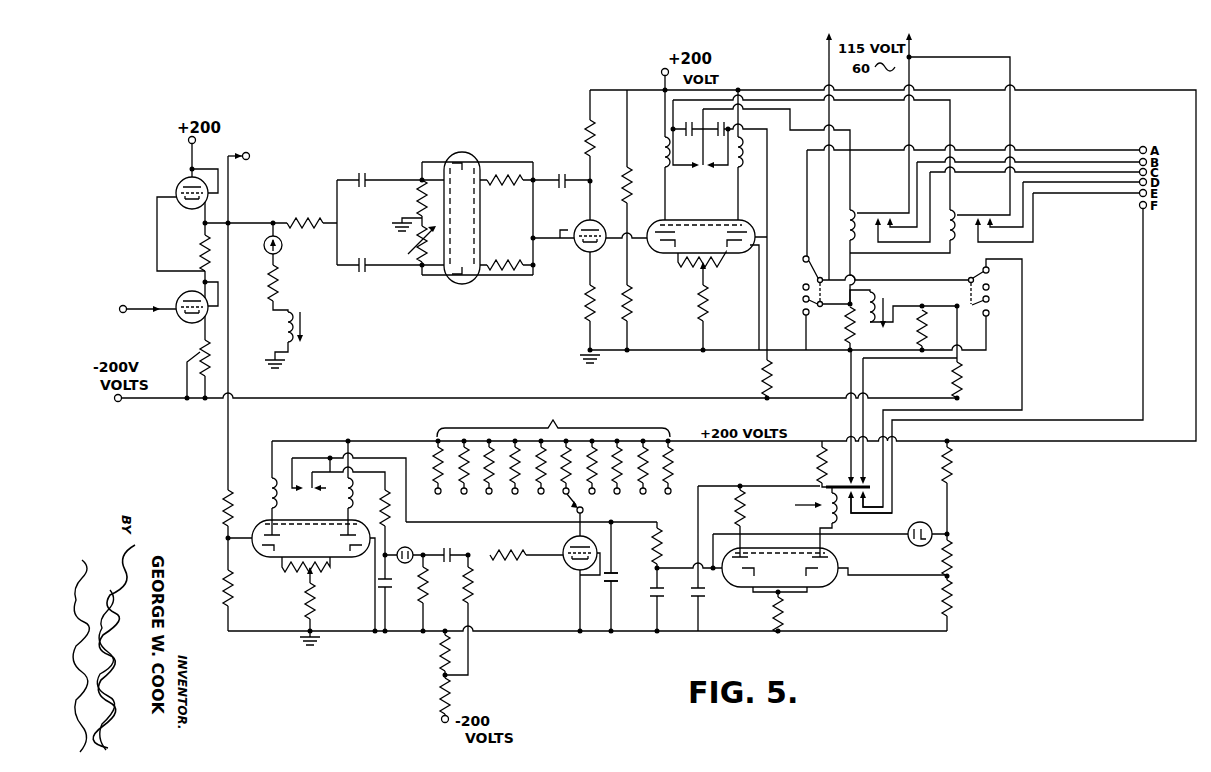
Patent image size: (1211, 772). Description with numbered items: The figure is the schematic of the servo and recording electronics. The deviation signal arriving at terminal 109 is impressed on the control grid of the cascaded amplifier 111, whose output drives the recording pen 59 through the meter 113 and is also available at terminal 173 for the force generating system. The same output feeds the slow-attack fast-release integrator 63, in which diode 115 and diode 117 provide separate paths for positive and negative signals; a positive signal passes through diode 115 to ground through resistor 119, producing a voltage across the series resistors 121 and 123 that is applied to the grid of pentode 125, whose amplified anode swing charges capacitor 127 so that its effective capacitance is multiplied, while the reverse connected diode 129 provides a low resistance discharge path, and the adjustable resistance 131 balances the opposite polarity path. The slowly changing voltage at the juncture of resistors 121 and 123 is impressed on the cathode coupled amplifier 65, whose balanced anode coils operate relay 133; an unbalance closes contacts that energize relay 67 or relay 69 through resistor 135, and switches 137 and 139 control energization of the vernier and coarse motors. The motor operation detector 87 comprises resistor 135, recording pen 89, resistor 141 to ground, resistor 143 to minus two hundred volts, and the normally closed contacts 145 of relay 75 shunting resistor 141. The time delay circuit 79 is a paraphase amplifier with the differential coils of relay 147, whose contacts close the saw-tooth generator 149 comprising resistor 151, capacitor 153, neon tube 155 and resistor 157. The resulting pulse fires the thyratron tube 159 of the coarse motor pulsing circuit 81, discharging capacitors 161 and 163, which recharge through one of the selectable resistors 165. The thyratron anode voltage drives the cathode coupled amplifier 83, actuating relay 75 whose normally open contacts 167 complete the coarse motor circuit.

The recording pen 59 is at (298, 340).
The slow-attack fast-release integrator 63 is at (456, 206).
The cathode coupled amplifier 65 is at (717, 208).
The relay 67 is at (890, 202).
The relay 69 is at (941, 217).
The relay 75 is at (801, 494).
The time delay circuit 79 is at (358, 591).
The coarse motor pulsing circuit 81 is at (562, 599).
The cathode coupled amplifier 83 is at (782, 584).
The motor operation detector 87 is at (938, 290).
The recording pen 89 is at (905, 316).
The terminal 109 is at (136, 302).
The cascaded amplifier 111 is at (175, 293).
The meter 113 is at (286, 262).
The diode 115 is at (374, 190).
The diode 117 is at (374, 268).
The resistor 119 is at (409, 198).
The resistor 121 is at (519, 188).
The resistor 123 is at (521, 258).
The pentode 125 is at (581, 222).
The capacitor 127 is at (578, 166).
The reverse connected diode 129 is at (468, 160).
The resistance 131 is at (418, 252).
The relay 133 is at (711, 170).
The resistor 135 is at (842, 325).
The switch 137 is at (869, 250).
The switch 139 is at (942, 383).
The resistor 141 is at (924, 335).
The resistor 143 is at (961, 389).
The normally closed contacts 145 is at (846, 478).
The relay 147 is at (299, 483).
The saw-tooth generator 149 is at (421, 541).
The resistor 151 is at (345, 498).
The capacitor 153 is at (414, 588).
The neon tube 155 is at (438, 553).
The resistor 157 is at (430, 585).
The thyratron tube 159 is at (576, 540).
The capacitor 161 is at (618, 572).
The capacitor 163 is at (652, 592).
The selectable resistors 165 is at (553, 449).
The normally open contacts 167 is at (870, 494).
The terminal 173 is at (265, 139).